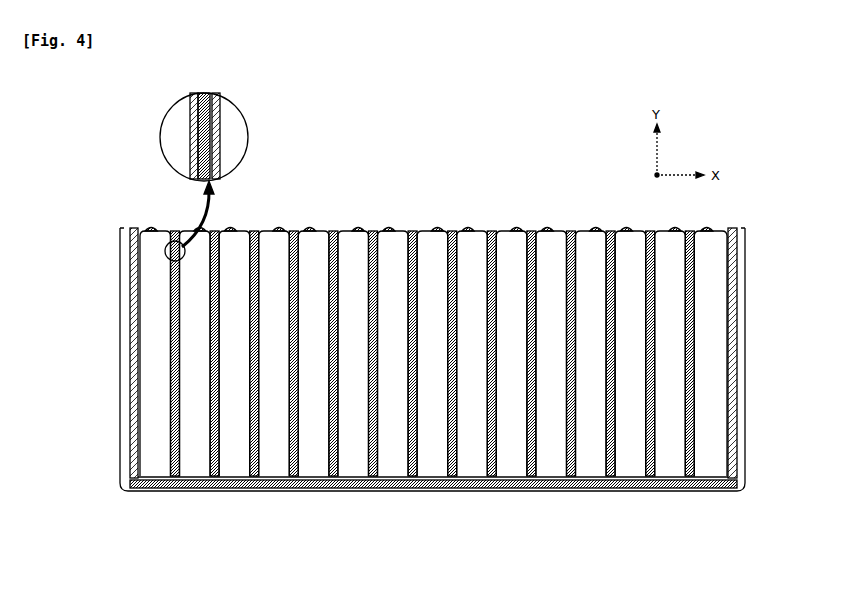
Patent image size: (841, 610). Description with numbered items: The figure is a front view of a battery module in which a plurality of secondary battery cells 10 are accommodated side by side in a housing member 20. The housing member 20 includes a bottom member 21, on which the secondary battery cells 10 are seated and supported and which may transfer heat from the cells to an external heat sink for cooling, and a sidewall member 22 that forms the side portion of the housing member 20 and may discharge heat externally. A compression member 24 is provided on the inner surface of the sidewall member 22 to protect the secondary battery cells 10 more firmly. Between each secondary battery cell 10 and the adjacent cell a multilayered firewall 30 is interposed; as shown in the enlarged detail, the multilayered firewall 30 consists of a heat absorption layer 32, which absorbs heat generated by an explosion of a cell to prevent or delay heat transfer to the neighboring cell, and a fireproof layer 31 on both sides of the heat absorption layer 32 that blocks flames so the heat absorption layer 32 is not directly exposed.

The secondary battery cell 10 is at (198, 462).
The housing member 20 is at (427, 397).
The bottom member 21 is at (180, 485).
The sidewall member 22 is at (124, 408).
The compression member 24 is at (138, 486).
The multilayered firewall 30 is at (427, 273).
The fireproof layer 31 is at (218, 105).
The heat absorption layer 32 is at (206, 93).